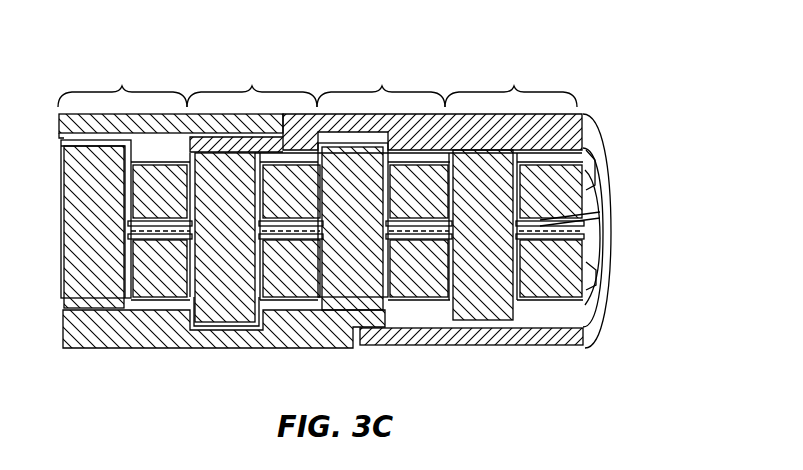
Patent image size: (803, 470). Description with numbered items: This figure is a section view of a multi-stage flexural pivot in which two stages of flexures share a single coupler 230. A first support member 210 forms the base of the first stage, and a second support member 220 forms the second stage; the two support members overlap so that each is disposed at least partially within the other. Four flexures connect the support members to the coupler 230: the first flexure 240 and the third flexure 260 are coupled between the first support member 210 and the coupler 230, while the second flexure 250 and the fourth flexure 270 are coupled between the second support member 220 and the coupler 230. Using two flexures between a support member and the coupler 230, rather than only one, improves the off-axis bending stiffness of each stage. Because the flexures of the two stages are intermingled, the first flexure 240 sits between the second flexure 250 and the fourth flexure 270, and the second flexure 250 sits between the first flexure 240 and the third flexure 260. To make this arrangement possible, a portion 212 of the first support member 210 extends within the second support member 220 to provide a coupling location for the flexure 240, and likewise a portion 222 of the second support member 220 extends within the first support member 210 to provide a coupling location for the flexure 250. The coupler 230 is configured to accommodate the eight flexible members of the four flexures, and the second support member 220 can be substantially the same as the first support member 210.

The first support member 210 is at (133, 332).
The portion of the first support member 212 is at (387, 340).
The second support member 220 is at (538, 337).
The portion of the second support member 222 is at (222, 117).
The coupler 230 is at (565, 197).
The first flexure 240 is at (384, 186).
The second flexure 250 is at (255, 192).
The third flexure 260 is at (125, 185).
The fourth flexure 270 is at (511, 191).